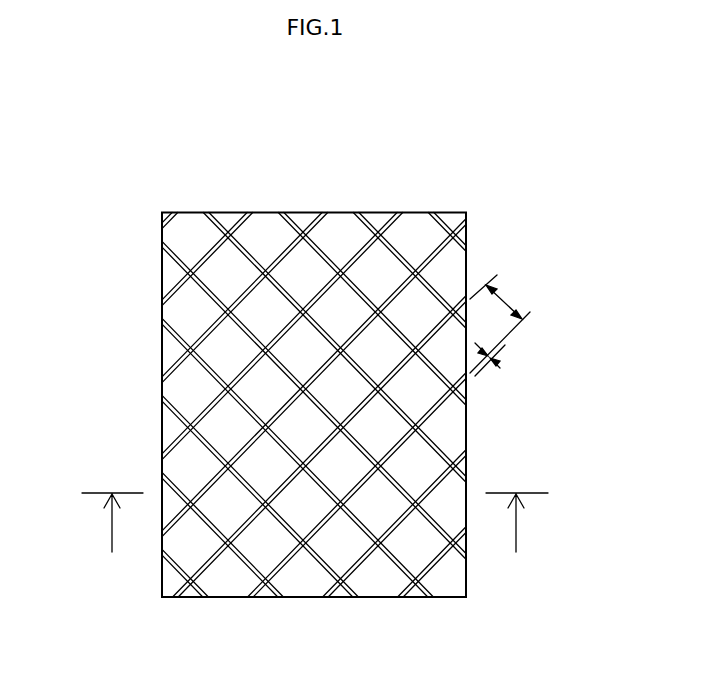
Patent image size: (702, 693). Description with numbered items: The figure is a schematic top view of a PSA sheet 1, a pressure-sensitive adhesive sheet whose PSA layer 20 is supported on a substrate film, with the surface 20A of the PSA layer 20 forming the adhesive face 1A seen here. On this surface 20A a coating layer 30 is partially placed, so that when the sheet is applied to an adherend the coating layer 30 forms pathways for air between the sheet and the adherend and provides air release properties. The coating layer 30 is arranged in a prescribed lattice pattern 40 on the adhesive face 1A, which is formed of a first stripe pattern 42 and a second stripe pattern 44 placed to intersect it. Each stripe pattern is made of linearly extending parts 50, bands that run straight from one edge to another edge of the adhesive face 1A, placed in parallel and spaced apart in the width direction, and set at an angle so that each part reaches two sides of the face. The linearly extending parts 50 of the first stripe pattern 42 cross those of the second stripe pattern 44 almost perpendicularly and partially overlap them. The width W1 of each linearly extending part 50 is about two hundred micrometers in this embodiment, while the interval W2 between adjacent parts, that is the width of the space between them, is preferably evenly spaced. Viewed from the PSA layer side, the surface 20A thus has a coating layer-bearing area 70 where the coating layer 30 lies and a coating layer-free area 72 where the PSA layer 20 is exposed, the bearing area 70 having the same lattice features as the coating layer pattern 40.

The PSA sheet 1 is at (171, 139).
The adhesive face 1A is at (424, 249).
The coating layer pattern 40 is at (248, 352).
The second stripe pattern 44 is at (263, 152).
The first stripe pattern 42 is at (88, 337).
The linearly extending part 50 is at (306, 231).
The surface of the PSA layer 20A is at (190, 398).
The PSA layer 20 is at (444, 422).
The coating layer-free area 72 is at (514, 417).
The coating layer 30 is at (444, 450).
The coating layer-bearing area 70 is at (499, 417).
The width of the linearly extending part W1 is at (509, 359).
The interval between the linearly extending parts W2 is at (507, 324).